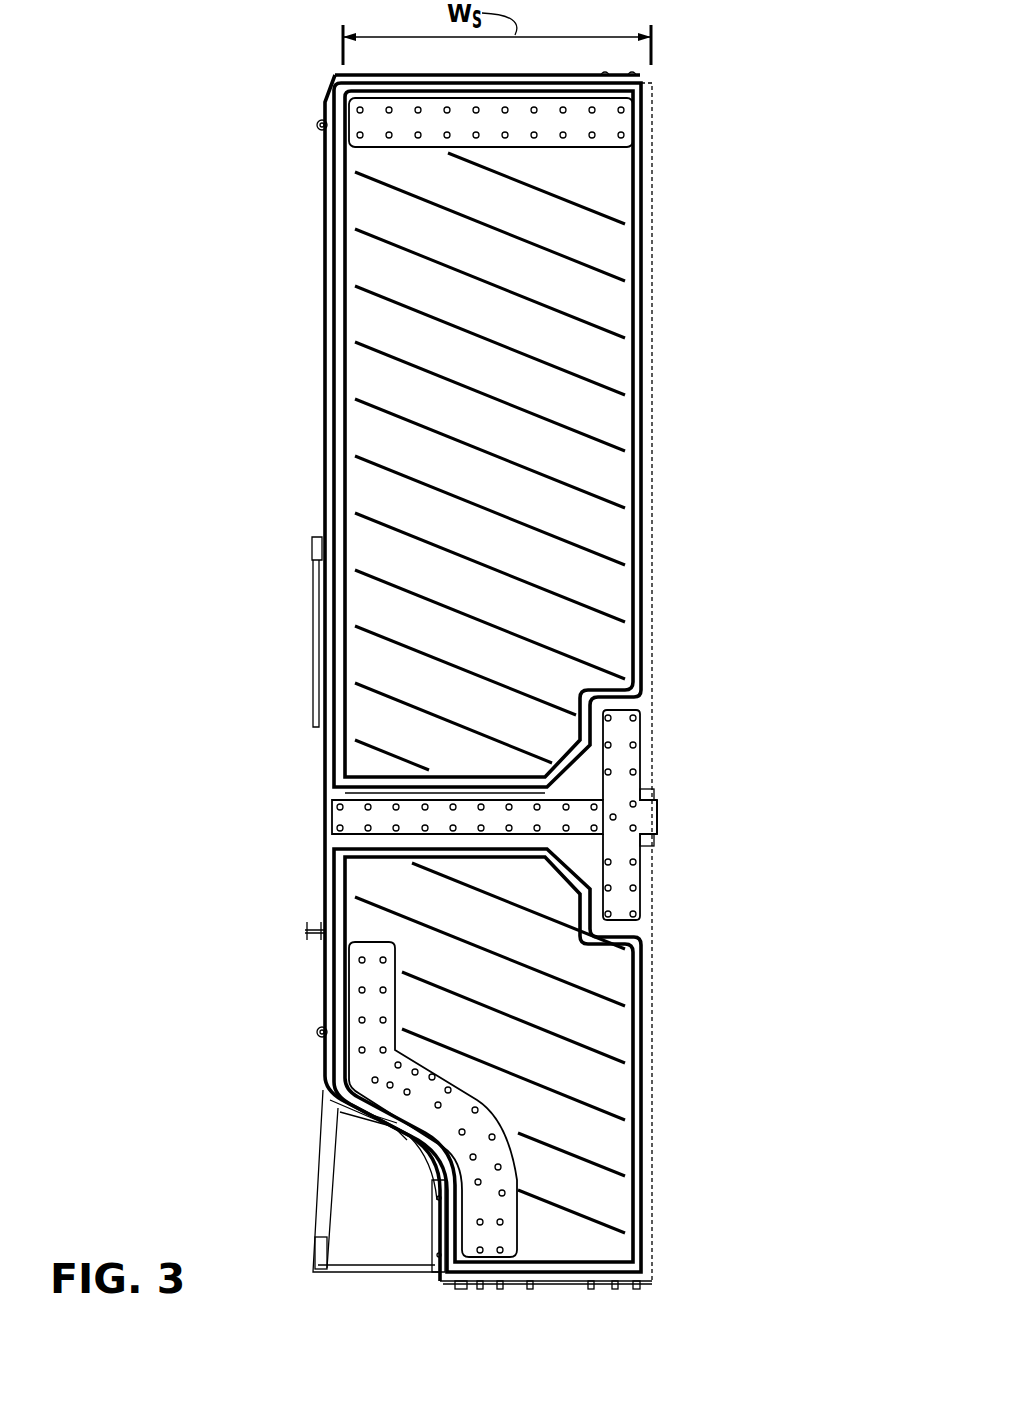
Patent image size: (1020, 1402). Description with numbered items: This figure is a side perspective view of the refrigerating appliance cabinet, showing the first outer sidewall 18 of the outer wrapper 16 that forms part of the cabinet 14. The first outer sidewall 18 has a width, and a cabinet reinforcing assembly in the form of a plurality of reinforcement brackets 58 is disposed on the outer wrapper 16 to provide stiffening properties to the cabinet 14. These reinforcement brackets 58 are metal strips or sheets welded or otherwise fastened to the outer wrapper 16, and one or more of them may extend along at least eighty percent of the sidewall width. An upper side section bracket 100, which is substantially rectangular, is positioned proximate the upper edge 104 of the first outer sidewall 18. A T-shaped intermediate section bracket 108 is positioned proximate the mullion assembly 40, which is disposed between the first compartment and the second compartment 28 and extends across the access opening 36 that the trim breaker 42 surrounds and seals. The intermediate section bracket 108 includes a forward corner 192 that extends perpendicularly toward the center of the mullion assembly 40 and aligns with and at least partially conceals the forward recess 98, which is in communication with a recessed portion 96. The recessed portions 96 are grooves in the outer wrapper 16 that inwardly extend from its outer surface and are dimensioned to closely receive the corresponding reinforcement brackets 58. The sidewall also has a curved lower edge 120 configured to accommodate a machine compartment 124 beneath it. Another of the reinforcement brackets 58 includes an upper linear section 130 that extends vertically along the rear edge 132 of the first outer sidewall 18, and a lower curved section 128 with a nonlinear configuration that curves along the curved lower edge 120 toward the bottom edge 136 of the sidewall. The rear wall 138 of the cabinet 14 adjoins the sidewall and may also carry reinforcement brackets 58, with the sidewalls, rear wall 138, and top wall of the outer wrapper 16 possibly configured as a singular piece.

The cabinet 14 is at (247, 255).
The outer wrapper 16 is at (572, 477).
The first outer sidewall 18 is at (597, 375).
The second compartment 28 is at (557, 1015).
The access opening 36 is at (676, 610).
The mullion assembly 40 is at (667, 833).
The trim breaker 42 is at (657, 513).
The reinforcement brackets 58 is at (587, 125).
The recessed portions 96 is at (372, 797).
The forward recess 98 is at (662, 808).
The upper side section bracket 100 is at (570, 125).
The upper edge 104 is at (427, 72).
The intermediate section bracket 108 is at (625, 760).
The curved lower edge 120 is at (423, 1160).
The machine compartment 124 is at (366, 1210).
The lower curved section 128 is at (490, 1232).
The upper linear section 130 is at (375, 973).
The rear edge 132 is at (322, 952).
The bottom edge 136 is at (608, 1290).
The rear wall 138 is at (322, 313).
The forward corner 192 is at (649, 807).